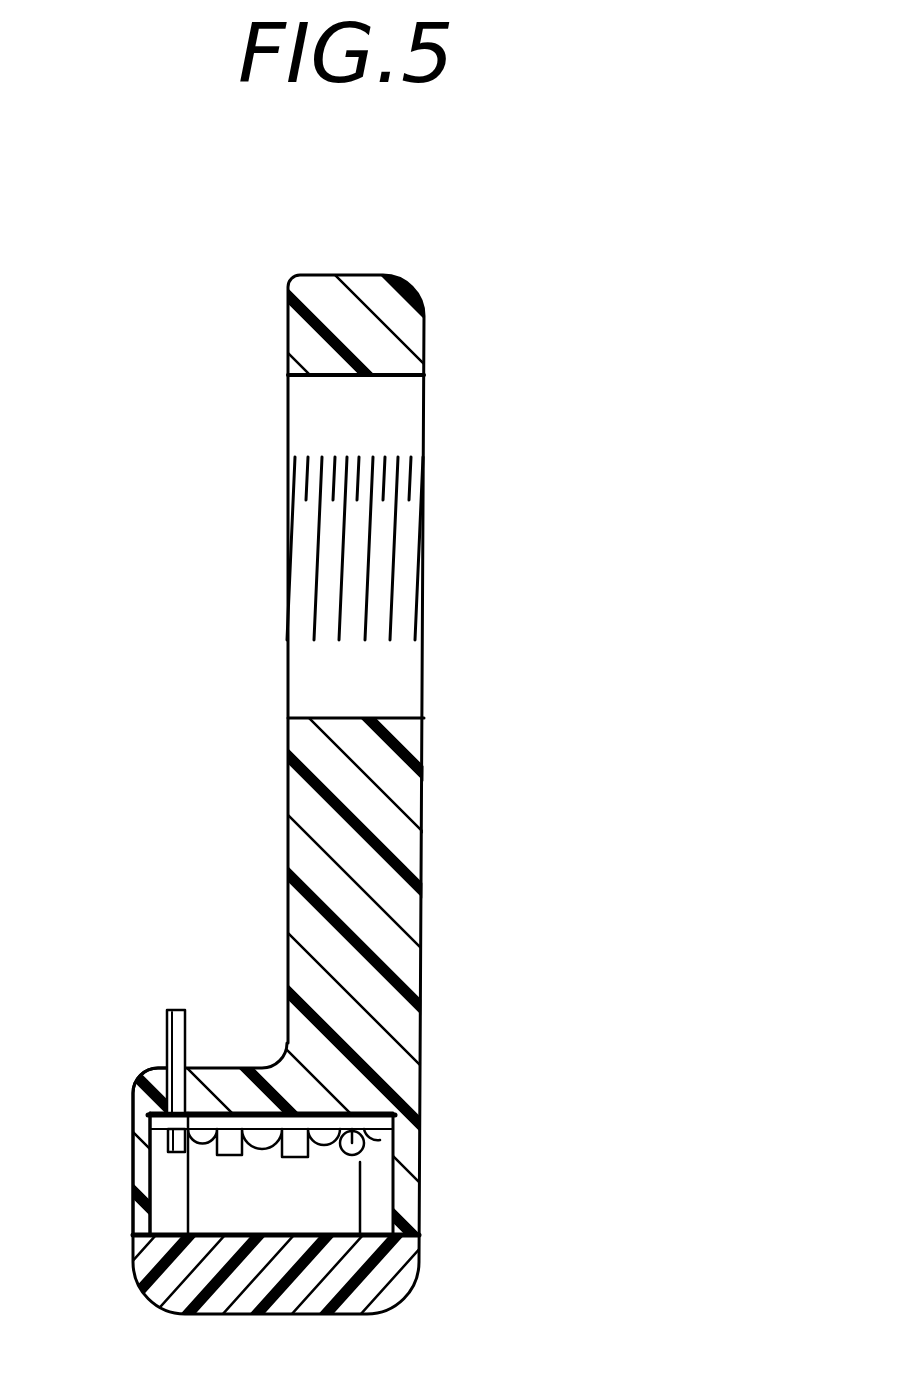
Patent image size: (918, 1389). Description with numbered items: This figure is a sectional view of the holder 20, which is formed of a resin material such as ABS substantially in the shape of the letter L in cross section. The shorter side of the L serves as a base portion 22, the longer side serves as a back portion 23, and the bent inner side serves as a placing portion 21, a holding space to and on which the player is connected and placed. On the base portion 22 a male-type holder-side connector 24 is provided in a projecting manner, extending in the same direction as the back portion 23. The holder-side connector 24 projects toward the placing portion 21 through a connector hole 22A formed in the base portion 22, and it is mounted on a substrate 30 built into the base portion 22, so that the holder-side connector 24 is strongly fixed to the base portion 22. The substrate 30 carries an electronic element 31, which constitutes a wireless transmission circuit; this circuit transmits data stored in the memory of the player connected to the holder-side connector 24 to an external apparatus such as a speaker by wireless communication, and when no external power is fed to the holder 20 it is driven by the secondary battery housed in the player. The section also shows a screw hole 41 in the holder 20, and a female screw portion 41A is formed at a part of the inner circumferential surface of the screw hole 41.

The holder 20 is at (492, 329).
The screw hole 41 is at (367, 377).
The female screw portion 41A is at (318, 550).
The placing portion 21 is at (290, 770).
The back portion 23 is at (396, 762).
The holder-side connector 24 is at (178, 1010).
The connector hole 22A is at (172, 1088).
The substrate 30 is at (377, 1122).
The electronic element 31 is at (230, 1147).
The base portion 22 is at (342, 1278).